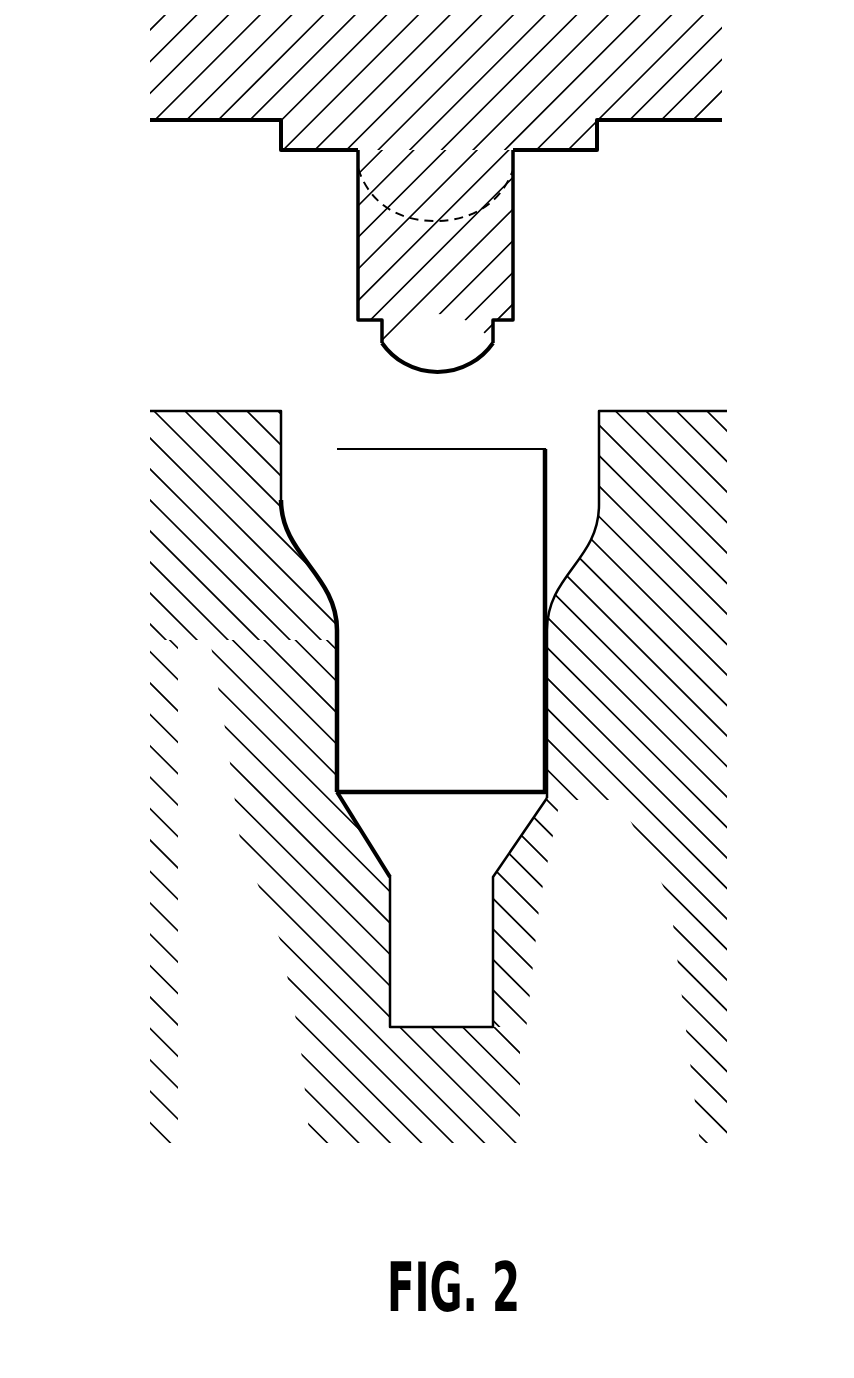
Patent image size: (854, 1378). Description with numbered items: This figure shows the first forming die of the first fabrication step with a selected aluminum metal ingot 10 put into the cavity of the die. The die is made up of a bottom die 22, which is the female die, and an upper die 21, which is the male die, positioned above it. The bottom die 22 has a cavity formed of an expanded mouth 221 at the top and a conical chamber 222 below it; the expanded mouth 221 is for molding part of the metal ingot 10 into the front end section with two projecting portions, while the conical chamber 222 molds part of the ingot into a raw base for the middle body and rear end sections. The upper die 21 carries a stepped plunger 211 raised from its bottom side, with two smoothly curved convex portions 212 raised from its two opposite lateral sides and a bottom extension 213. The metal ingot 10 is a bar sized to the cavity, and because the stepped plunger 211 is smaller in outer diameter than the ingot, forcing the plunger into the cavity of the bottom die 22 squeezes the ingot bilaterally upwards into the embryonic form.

The metal ingot 10 is at (510, 472).
The upper die 21 is at (692, 82).
The stepped plunger 211 is at (497, 270).
The smoothly curved convex portions 212 is at (378, 221).
The bottom extension 213 is at (415, 365).
The bottom die 22 is at (687, 482).
The expanded mouth 221 is at (305, 488).
The conical chamber 222 is at (425, 849).